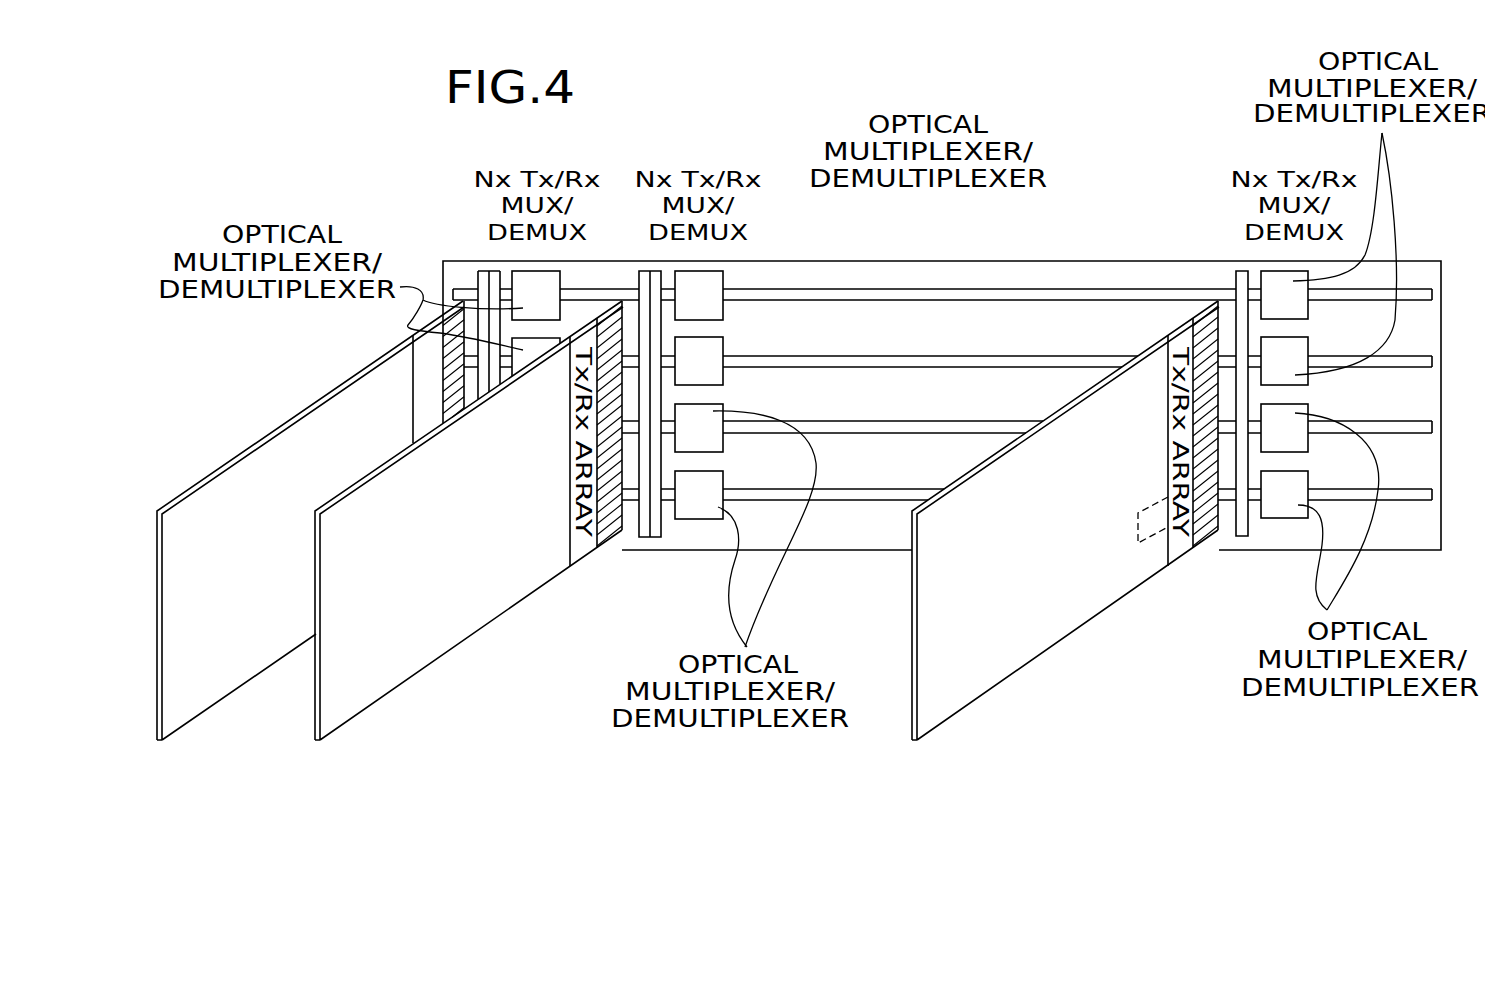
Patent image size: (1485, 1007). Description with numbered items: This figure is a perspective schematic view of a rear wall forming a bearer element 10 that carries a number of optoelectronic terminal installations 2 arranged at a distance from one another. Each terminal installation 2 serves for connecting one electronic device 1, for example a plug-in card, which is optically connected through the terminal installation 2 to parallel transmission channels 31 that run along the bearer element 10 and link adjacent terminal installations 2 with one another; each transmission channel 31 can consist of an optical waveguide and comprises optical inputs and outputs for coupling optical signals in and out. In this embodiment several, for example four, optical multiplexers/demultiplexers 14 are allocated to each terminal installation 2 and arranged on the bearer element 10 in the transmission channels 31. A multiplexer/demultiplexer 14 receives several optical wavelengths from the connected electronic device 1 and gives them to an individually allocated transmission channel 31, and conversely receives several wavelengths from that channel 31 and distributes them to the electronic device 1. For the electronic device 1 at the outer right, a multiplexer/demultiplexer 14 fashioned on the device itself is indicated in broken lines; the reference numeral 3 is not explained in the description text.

The electronic device 1 is at (210, 717).
The optoelectronic terminal installation 2 is at (466, 265).
The optical transmission path 3 is at (942, 398).
The transmission channel 31 is at (908, 362).
The bearer element 10 is at (1133, 260).
The optical multiplexer/demultiplexer 14 is at (725, 310).